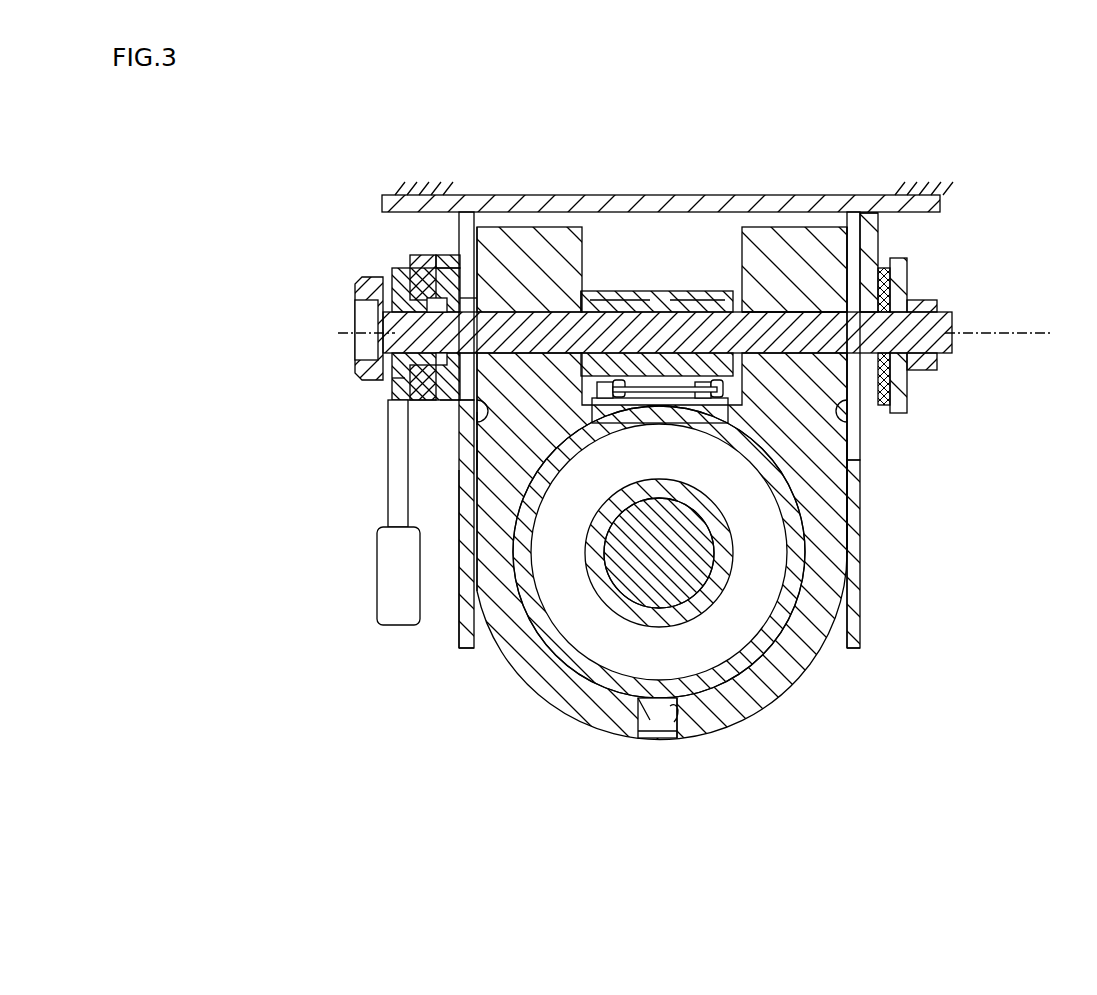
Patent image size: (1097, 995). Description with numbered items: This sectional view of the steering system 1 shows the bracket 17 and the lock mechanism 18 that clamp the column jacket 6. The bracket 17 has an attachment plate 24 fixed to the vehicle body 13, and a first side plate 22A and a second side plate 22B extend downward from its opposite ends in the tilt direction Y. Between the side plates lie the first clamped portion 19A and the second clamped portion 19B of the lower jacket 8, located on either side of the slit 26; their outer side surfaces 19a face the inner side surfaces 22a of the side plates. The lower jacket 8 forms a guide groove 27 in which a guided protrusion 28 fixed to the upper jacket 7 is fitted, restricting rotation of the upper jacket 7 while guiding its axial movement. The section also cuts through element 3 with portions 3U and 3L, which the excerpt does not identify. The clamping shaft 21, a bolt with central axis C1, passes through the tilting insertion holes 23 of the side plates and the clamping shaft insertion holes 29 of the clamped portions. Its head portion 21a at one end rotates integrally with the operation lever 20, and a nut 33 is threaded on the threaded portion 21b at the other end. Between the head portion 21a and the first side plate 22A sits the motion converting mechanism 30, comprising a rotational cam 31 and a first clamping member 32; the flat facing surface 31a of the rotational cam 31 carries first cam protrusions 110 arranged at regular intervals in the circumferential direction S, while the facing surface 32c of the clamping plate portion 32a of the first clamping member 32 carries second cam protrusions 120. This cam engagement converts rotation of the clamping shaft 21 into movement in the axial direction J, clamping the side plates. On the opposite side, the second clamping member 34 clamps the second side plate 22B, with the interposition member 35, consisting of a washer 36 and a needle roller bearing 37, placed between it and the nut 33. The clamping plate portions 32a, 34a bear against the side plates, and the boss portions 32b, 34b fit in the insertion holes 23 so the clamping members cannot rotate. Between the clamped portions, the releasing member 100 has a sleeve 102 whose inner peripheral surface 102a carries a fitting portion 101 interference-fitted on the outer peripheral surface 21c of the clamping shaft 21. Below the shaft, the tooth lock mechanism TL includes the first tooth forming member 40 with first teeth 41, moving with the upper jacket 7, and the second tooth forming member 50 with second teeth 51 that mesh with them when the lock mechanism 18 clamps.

The steering system 1 is at (968, 173).
The shaft 3 is at (926, 545).
The lower shaft portion 3L is at (690, 554).
The upper shaft portion 3U is at (716, 608).
The column jacket 6 is at (612, 772).
The upper jacket 7 is at (600, 683).
The lower jacket 8 is at (549, 690).
The vehicle body 13 is at (405, 190).
The bracket 17 is at (716, 198).
The lock mechanism 18 is at (346, 358).
The first clamped portion 19A is at (548, 248).
The second clamped portion 19B is at (775, 250).
The outer side surface 19a is at (478, 455).
The operation lever 20 is at (396, 513).
The clamping shaft 21 is at (380, 345).
The head portion 21a is at (365, 290).
The threaded portion 21b is at (940, 306).
The outer peripheral surface 21c is at (800, 312).
The first side plate 22A is at (465, 235).
The second side plate 22B is at (857, 300).
The inner side surface 22a is at (476, 412).
The tilting insertion hole 23 is at (459, 472).
The attachment plate 24 is at (648, 205).
The slit 26 is at (697, 232).
The guide groove 27 is at (668, 712).
The guided protrusion 28 is at (653, 722).
The clamping shaft insertion hole 29 is at (535, 300).
The motion converting mechanism 30 is at (342, 224).
The rotational cam 31 is at (420, 268).
The facing surface 31a is at (393, 378).
The first clamping member 32 is at (445, 262).
The clamping plate portion 32a is at (430, 270).
The boss portion 32b is at (470, 298).
The facing surface 32c is at (470, 358).
The nut 33 is at (900, 300).
The second clamping member 34 is at (870, 254).
The clamping plate portion 34a is at (872, 262).
The boss portion 34b is at (856, 230).
The interposition member 35 is at (980, 372).
The washer 36 is at (890, 380).
The needle roller bearing 37 is at (895, 405).
The first tooth forming member 40 is at (588, 406).
The first teeth 41 is at (602, 400).
The second tooth forming member 50 is at (656, 392).
The second teeth 51 is at (619, 390).
The releasing member 100 is at (680, 287).
The fitting portion 101 is at (645, 300).
The sleeve 102 is at (705, 300).
The inner peripheral surface 102a is at (586, 298).
The first cam protrusions 110 is at (440, 400).
The second cam protrusions 120 is at (476, 416).
The central axis C1 is at (350, 328).
The tooth lock mechanism TL is at (632, 292).
The circumferential direction S is at (1012, 350).
The axial direction J is at (202, 330).
The tilt direction Y is at (803, 722).